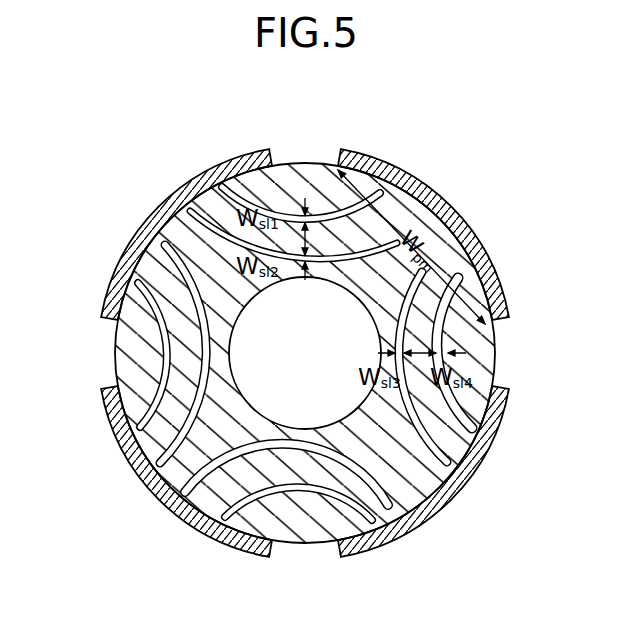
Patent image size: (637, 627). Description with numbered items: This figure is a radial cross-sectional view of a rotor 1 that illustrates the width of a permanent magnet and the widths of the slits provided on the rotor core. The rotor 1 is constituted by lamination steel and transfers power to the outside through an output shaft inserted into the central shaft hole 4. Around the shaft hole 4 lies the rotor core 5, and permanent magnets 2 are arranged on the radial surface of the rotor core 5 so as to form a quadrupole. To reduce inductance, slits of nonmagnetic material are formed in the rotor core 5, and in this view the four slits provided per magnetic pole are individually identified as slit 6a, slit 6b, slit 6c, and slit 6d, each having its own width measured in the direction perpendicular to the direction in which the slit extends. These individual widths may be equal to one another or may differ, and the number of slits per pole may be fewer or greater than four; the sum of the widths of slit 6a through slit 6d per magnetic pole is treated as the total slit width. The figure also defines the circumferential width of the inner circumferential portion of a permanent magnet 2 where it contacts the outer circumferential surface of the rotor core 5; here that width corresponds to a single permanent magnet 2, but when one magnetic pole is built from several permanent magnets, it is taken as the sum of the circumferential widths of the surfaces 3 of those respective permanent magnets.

The rotor 1 is at (135, 210).
The permanent magnet 2 is at (433, 197).
The surface 3 is at (487, 260).
The shaft hole 4 is at (425, 480).
The rotor core 5 is at (152, 497).
The slit 6a is at (228, 186).
The slit 6b is at (192, 212).
The slit 6c is at (457, 468).
The slit 6d is at (479, 437).